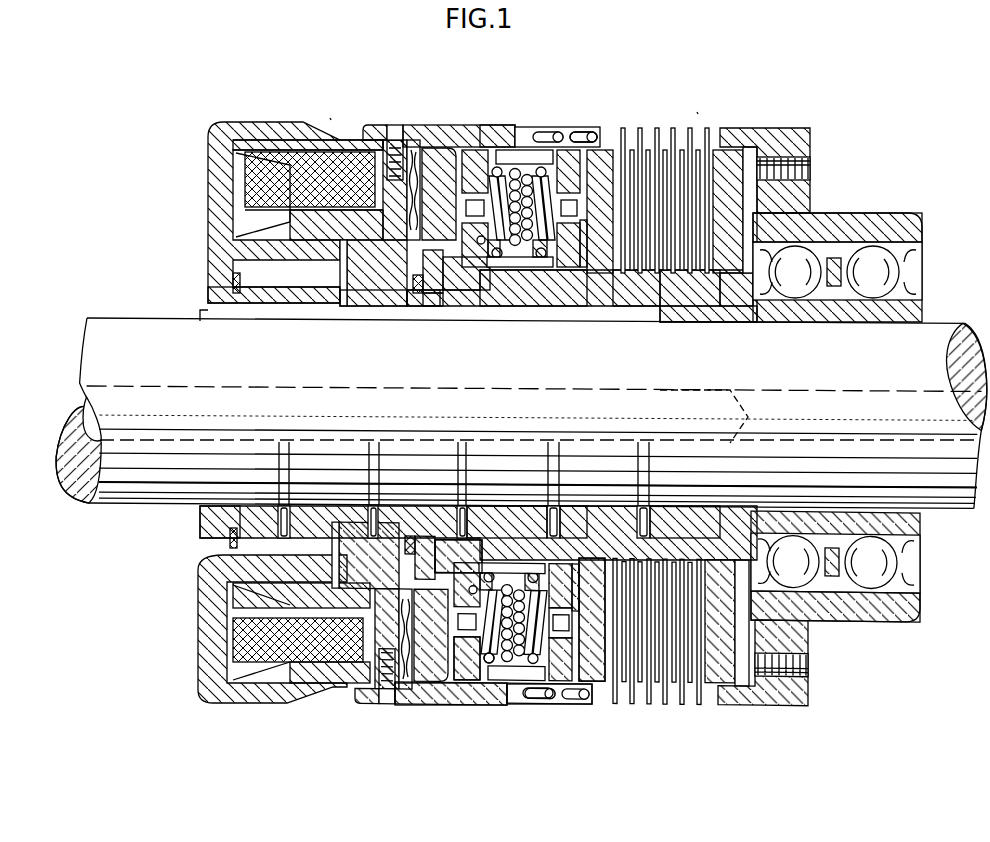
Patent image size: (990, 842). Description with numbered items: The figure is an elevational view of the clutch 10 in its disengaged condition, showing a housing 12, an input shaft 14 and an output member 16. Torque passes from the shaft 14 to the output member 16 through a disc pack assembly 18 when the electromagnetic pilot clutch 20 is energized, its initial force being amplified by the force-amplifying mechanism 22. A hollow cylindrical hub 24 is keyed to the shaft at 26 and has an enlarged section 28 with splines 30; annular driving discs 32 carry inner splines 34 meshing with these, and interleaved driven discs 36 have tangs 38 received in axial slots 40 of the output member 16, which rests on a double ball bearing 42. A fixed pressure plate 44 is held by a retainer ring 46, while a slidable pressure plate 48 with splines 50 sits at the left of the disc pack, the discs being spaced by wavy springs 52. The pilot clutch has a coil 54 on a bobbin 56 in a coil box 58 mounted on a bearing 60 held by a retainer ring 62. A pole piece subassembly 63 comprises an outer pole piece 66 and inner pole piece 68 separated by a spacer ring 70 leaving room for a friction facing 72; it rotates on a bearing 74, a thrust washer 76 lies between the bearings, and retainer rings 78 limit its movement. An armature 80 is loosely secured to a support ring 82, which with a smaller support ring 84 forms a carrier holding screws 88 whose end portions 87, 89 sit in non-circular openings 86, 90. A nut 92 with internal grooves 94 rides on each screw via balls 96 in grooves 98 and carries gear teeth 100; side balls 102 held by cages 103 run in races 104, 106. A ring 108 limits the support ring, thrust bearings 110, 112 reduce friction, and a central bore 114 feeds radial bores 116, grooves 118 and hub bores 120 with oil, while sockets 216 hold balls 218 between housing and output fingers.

The clutch 10 is at (698, 112).
The housing 12 is at (470, 125).
The shaft 14 is at (84, 352).
The output member 16 is at (800, 128).
The disc pack assembly 18 is at (641, 122).
The electromagnetic actuator or pilot clutch 20 is at (331, 116).
The force-amplifying mechanism 22 is at (556, 122).
The hollow cylindrical hub 24 is at (208, 515).
The key 26 is at (205, 313).
The section of increased diameter 28 is at (745, 290).
The splines 30 is at (560, 285).
The annular driving discs 32 is at (630, 290).
The splines 34 is at (670, 290).
The annular driven discs 36 is at (658, 128).
The tabs or tangs 38 is at (623, 128).
The axially extending slots 40 is at (717, 149).
The double ball bearing 42 is at (922, 230).
The annular pressure plate 44 is at (740, 196).
The retainer ring 46 is at (777, 240).
The axially slidable pressure plate 48 is at (584, 268).
The splines 50 is at (600, 274).
The wavy washer-shaped springs 52 is at (705, 318).
The annular coil 54 is at (304, 407).
The bobbin 56 is at (262, 230).
The annular coil box 58 is at (218, 124).
The bearing 60 is at (232, 282).
The retainer ring 62 is at (245, 304).
The pole piece subassembly 63 is at (374, 126).
The outer pole piece 66 is at (350, 142).
The inner pole piece 68 is at (397, 190).
The spacer ring 70 is at (314, 446).
The annular friction facing 72 is at (413, 140).
The bearing 74 is at (373, 273).
The thrust washer 76 is at (345, 306).
The retainer rings 78 is at (415, 306).
The annular armature 80 is at (440, 150).
The support ring 82 is at (438, 295).
The annular support ring 84 is at (548, 268).
The non-circular openings 86 is at (477, 183).
The end portion 87 is at (455, 565).
The screw 88 is at (475, 292).
The other end portion 89 is at (565, 540).
The non-circular openings 90 is at (570, 208).
The nut 92 is at (520, 262).
The internal grooves 94 is at (527, 150).
The ball bearings 96 is at (502, 262).
The grooves 98 is at (560, 618).
The gear teeth 100 is at (520, 283).
The ball bearings 102 is at (490, 665).
The cages 103 is at (480, 672).
The race 104 is at (503, 122).
The race 106 is at (544, 166).
The ring 108 is at (422, 292).
The thrust bearing 110 is at (434, 306).
The thrust bearing 112 is at (592, 617).
The central bore / screws 114 is at (395, 128).
The radial bores 116 is at (393, 440).
The circumferential grooves 118 is at (290, 521).
The radial bores 120 is at (379, 522).
The sockets 216 is at (562, 705).
The ball bearing 218 is at (578, 130).